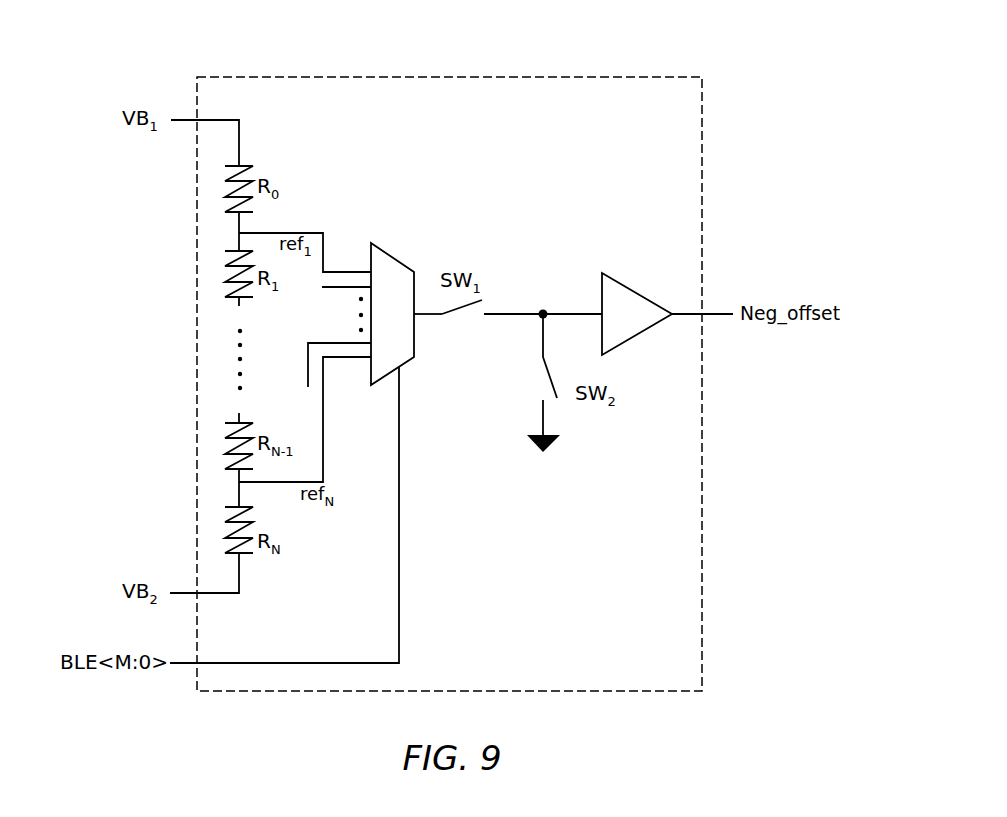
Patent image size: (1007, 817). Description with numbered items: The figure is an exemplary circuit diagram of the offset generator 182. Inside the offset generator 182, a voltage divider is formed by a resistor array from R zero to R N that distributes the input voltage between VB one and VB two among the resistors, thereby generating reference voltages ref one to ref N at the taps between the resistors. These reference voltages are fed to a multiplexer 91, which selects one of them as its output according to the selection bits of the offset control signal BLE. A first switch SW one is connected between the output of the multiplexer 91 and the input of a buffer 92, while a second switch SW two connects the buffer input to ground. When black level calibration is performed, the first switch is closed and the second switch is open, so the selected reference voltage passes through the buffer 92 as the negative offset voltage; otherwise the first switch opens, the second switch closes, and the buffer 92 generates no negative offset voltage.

The offset generator 182 is at (636, 76).
The multiplexer 91 is at (392, 249).
The buffer 92 is at (628, 288).